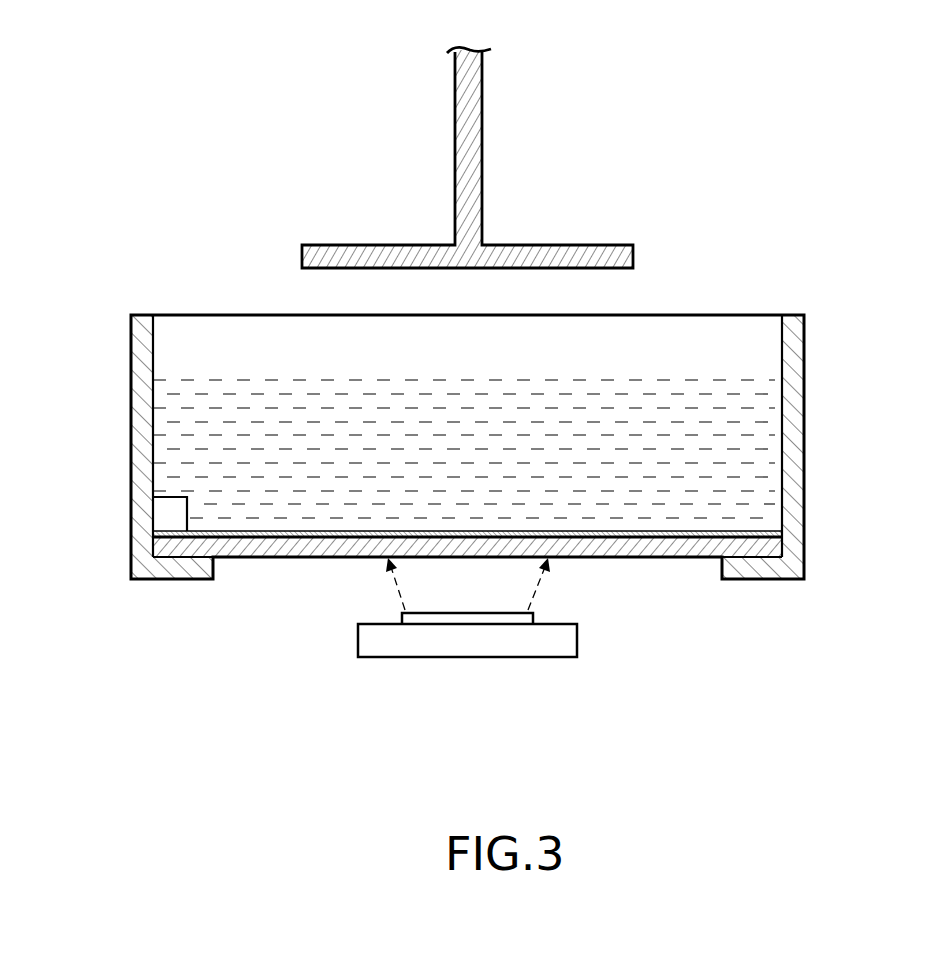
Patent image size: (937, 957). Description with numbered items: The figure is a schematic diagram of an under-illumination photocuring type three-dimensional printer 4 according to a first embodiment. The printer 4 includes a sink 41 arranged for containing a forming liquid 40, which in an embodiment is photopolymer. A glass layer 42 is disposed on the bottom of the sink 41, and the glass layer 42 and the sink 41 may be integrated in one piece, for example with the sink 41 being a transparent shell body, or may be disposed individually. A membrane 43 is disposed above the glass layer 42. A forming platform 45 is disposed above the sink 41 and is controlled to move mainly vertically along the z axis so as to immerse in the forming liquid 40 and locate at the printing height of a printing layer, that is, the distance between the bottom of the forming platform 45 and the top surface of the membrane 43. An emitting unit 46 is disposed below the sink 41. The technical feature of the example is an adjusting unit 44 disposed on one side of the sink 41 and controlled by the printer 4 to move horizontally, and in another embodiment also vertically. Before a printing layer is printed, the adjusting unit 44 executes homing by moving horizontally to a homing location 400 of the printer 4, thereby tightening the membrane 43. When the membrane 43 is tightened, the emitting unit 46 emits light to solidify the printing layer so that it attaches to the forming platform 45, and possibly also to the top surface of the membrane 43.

The 3D printer 4 is at (270, 62).
The forming liquid 40 is at (713, 407).
The sink 41 is at (145, 348).
The glass layer 42 is at (263, 540).
The membrane 43 is at (623, 532).
The adjusting unit 44 is at (168, 512).
The forming platform 45 is at (592, 260).
The emitting unit 46 is at (558, 633).
The homing location 400 is at (173, 536).